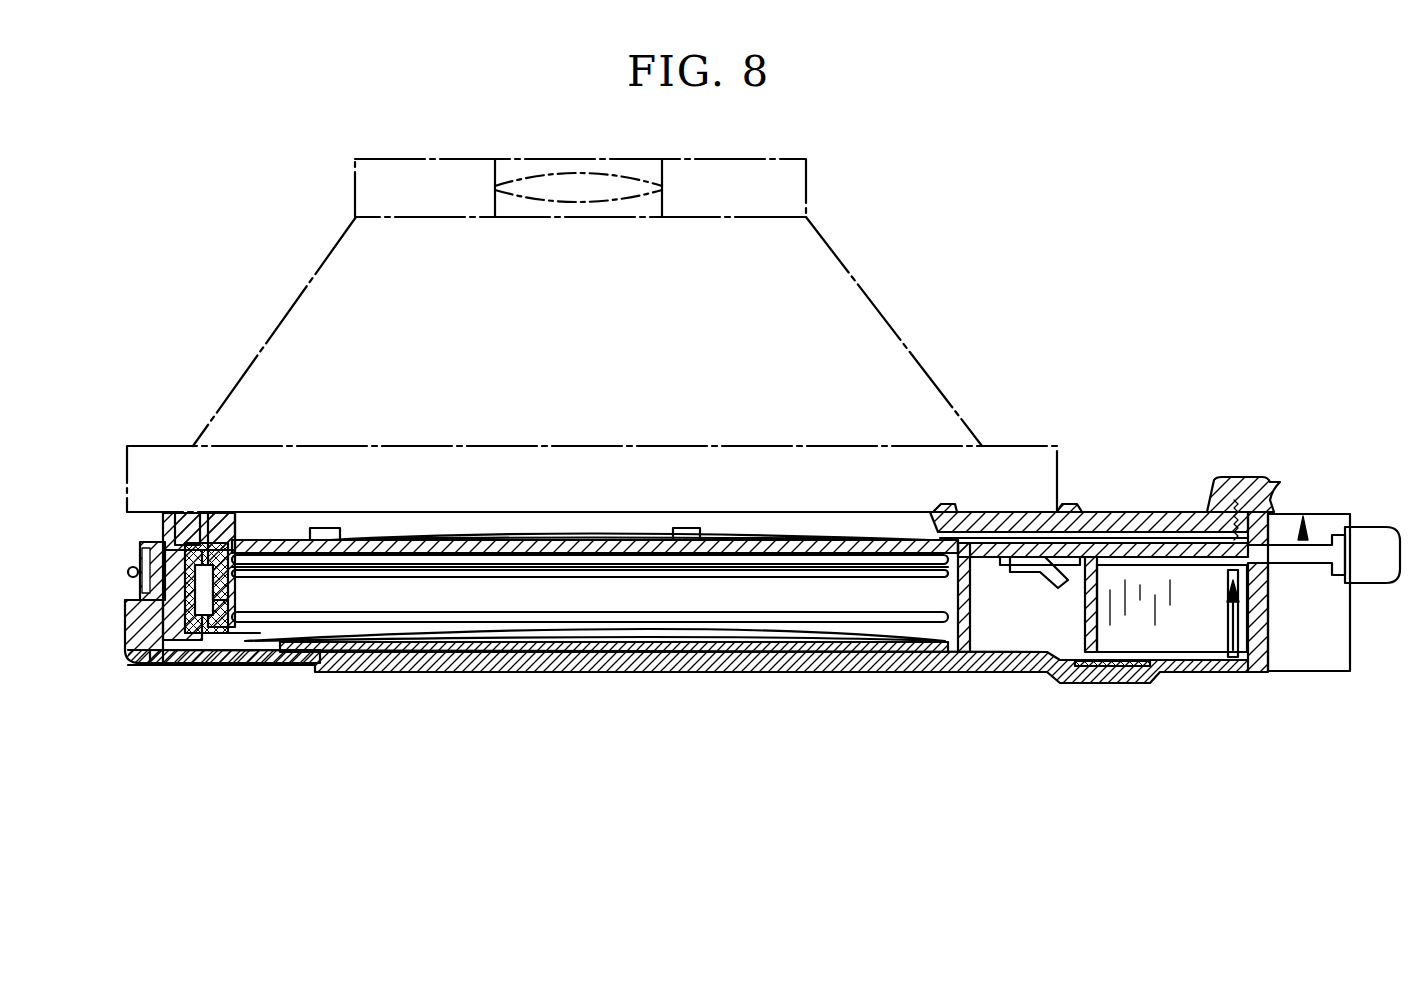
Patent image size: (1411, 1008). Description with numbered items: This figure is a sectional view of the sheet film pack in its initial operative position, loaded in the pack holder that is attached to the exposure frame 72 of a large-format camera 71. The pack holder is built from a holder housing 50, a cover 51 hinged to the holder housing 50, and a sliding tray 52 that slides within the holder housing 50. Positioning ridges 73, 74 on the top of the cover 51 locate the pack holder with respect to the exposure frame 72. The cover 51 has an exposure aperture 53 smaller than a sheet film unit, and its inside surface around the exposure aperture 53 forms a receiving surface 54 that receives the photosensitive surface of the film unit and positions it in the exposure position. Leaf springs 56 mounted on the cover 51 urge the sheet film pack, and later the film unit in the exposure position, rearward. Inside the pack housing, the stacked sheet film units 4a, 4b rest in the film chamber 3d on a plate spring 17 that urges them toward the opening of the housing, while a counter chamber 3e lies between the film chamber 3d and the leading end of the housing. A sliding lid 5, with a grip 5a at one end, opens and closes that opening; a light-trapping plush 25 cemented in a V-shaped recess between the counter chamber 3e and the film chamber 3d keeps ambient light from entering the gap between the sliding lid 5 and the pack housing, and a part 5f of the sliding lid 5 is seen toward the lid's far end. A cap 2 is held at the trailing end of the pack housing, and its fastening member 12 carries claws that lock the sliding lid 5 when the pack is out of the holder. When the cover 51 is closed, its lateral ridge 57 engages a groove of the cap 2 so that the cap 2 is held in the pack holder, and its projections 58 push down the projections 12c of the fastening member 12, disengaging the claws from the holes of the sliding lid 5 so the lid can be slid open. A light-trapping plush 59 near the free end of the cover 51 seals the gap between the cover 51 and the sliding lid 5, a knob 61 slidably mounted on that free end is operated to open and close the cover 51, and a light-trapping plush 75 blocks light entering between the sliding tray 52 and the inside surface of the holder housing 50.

The large-format camera 71 is at (878, 303).
The exposure frame 72 is at (1022, 445).
The positioning ridge 73 is at (946, 504).
The positioning ridge 74 is at (1070, 504).
The cover 51 is at (1130, 512).
The light-trapping plush 59 is at (1015, 543).
The exposure aperture 53 is at (468, 540).
The receiving surface 54 is at (556, 540).
The leaf springs 56 is at (372, 538).
The upper guide shaft 4a is at (660, 555).
The lower guide shaft 4b is at (740, 570).
The plate spring 17 is at (596, 652).
The holder housing 50 is at (718, 685).
The film chamber 3d is at (960, 672).
The counter chamber 3e is at (1165, 640).
The light-trapping plush 25 is at (1018, 588).
The light-trapping plush 75 is at (1112, 683).
The drive pin 5f is at (1240, 672).
The knob 61 is at (1242, 477).
The sliding tray 52 is at (1275, 635).
The sliding lid 5 is at (1303, 516).
The grip 5a is at (1382, 527).
The projections 58 is at (170, 560).
The lateral ridge 57 is at (198, 513).
The cap 2 is at (235, 513).
The fastening member 12 is at (205, 665).
The projections 12c is at (228, 600).